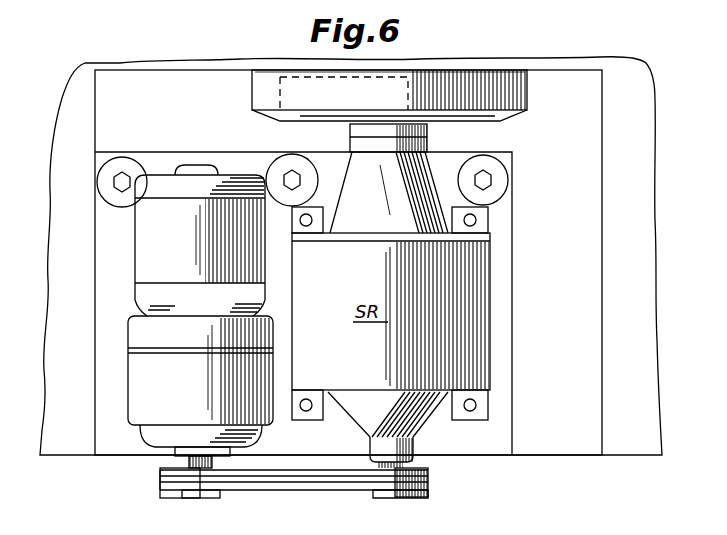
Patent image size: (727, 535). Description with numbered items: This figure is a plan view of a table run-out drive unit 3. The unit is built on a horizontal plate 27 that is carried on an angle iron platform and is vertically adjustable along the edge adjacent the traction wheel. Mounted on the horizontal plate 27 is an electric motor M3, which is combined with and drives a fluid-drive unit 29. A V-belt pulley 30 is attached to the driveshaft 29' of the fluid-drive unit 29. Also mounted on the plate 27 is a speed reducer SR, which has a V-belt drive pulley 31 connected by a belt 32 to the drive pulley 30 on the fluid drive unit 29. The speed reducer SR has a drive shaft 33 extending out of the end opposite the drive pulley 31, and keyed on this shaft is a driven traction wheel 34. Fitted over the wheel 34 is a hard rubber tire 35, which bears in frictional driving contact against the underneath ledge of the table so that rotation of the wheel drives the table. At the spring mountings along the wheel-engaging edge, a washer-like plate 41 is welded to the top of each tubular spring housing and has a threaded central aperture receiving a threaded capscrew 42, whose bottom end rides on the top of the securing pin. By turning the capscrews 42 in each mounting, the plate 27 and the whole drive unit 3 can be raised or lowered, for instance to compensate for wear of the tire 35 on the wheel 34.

The drive unit 3 is at (496, 277).
The horizontal plate 27 is at (512, 340).
The fluid-drive unit 29 is at (168, 381).
The driveshaft 29' is at (170, 463).
The V-belt pulley 30 is at (163, 500).
The V-belt drive pulley 31 is at (428, 471).
The belt 32 is at (300, 489).
The drive shaft 33 is at (427, 138).
The driven traction wheel 34 is at (466, 70).
The hard rubber tire 35 is at (527, 100).
The washer-like plate 41 is at (501, 184).
The threaded capscrew 42 is at (487, 173).
The electric motor M3 is at (156, 241).